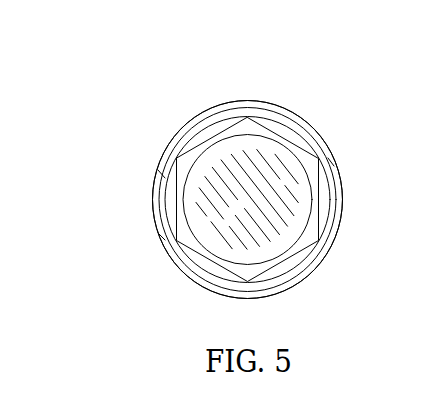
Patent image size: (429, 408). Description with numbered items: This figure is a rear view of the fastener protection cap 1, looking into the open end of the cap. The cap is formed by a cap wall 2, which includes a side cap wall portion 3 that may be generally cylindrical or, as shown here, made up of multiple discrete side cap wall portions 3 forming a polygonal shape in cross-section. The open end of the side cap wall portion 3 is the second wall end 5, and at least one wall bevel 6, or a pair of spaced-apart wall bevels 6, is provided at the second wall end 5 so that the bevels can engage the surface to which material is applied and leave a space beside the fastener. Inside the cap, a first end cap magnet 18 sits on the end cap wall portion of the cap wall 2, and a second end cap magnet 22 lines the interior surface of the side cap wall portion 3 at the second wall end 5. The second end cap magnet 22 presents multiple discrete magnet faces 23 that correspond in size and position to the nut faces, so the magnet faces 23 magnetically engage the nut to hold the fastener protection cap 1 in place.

The fastener protection cap 1 is at (155, 94).
The cap wall 2 is at (152, 144).
The side cap wall portion 3 is at (233, 135).
The second wall end 5 is at (248, 300).
The wall bevel 6 is at (344, 198).
The first end cap magnet 18 is at (217, 156).
The second end cap magnet 22 is at (305, 103).
The magnet faces 23 is at (322, 186).